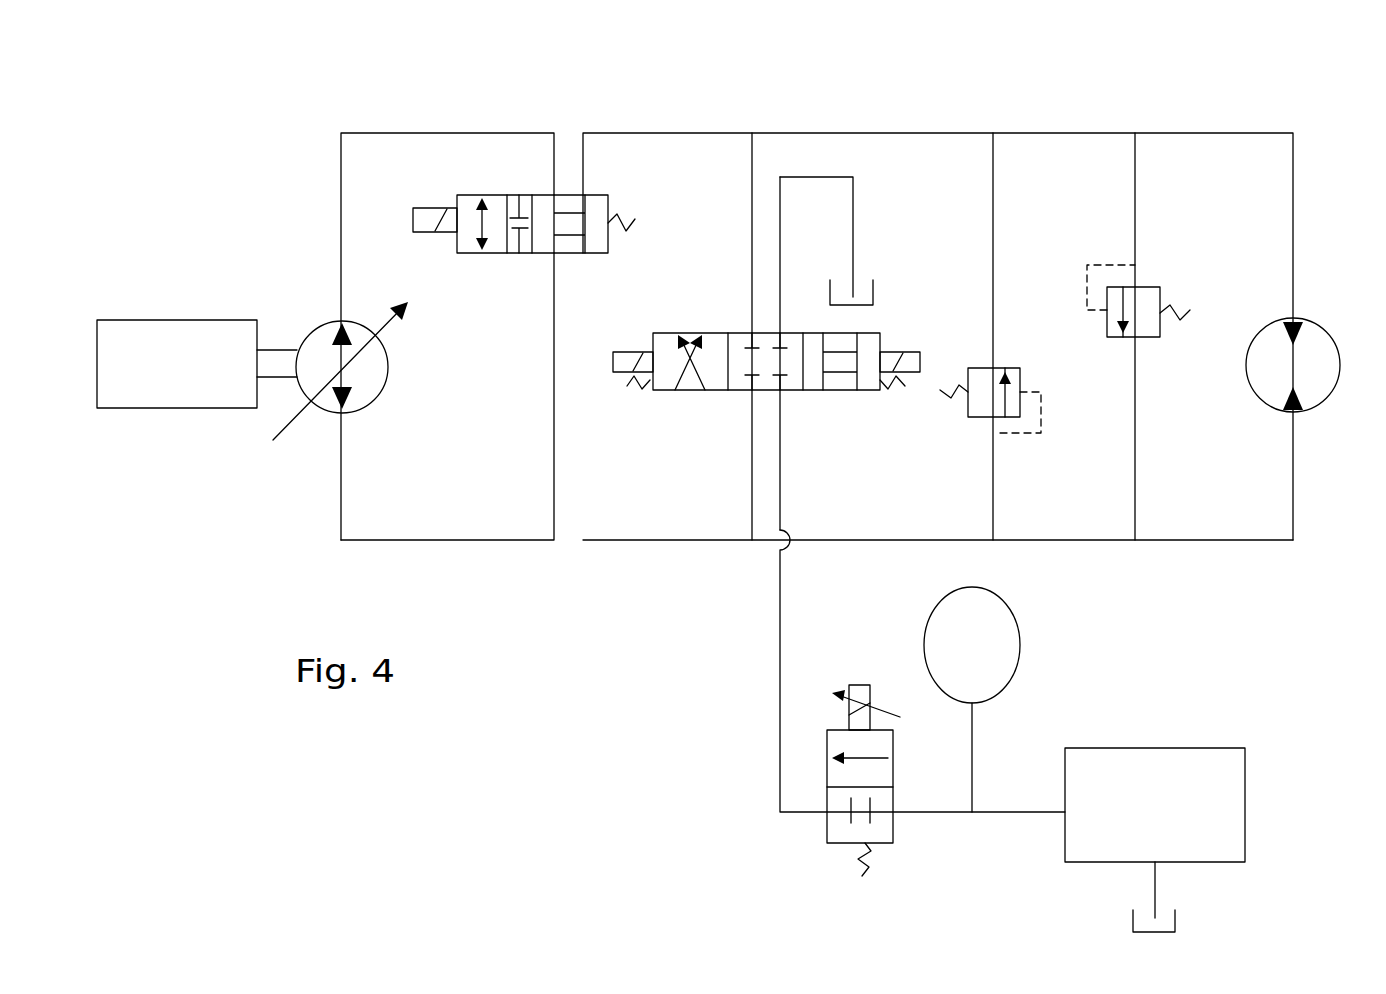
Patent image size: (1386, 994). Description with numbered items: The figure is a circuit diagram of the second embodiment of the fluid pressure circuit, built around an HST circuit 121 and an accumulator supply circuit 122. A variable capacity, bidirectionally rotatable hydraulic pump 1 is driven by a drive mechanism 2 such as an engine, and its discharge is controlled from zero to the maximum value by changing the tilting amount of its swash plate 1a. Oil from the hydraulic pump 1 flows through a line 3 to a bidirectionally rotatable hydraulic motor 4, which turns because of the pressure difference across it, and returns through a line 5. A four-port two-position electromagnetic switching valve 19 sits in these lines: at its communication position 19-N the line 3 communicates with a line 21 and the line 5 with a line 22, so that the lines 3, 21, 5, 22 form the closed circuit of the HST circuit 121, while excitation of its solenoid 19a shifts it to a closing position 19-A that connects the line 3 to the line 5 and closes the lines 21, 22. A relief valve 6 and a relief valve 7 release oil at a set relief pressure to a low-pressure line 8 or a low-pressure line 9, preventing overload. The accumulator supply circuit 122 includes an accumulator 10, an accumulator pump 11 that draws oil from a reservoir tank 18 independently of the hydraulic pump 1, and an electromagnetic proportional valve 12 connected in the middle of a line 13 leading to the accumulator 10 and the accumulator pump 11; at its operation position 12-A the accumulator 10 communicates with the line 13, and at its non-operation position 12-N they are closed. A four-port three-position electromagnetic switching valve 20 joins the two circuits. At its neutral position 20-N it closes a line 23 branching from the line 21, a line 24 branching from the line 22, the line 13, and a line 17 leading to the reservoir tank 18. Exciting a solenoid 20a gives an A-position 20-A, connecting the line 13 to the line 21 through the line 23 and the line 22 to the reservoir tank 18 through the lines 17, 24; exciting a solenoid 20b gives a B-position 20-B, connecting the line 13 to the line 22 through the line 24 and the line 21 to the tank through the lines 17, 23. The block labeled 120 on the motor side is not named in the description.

The hydraulic pump 1 is at (322, 412).
The swash plate 1a is at (290, 420).
The drive mechanism 2 is at (182, 320).
The line 3 is at (462, 133).
The hydraulic motor 4 is at (1312, 407).
The line 5 is at (500, 540).
The relief valve 6 is at (1140, 287).
The relief valve 7 is at (1007, 366).
The low-pressure line 8 is at (1135, 470).
The low-pressure line 9 is at (993, 178).
The accumulator 10 is at (1020, 645).
The accumulator pump 11 is at (1165, 748).
The electromagnetic proportional valve 12 is at (895, 768).
The operation position 12-A is at (893, 776).
The non-operation position 12-N is at (893, 828).
The line 13 is at (780, 752).
The line 17 is at (853, 229).
The reservoir tank 18 is at (873, 290).
The four-port two-position electromagnetic switching valve 19 is at (507, 197).
The solenoid 19a is at (420, 208).
The closing position 19-A is at (497, 195).
The communication position 19-N is at (592, 195).
The four-port three-position electromagnetic switching valve 20 is at (788, 390).
The solenoid 20a is at (640, 352).
The solenoid 20b is at (922, 360).
The A-position 20-A is at (680, 392).
The B-position 20-B is at (845, 392).
The neutral position 20-N is at (765, 392).
The line 21 is at (857, 133).
The line 22 is at (845, 540).
The line 23 is at (752, 170).
The line 24 is at (752, 503).
The motor-side hydraulic circuit 120 is at (1160, 94).
The HST circuit 121 is at (632, 96).
The accumulator supply circuit 122 is at (1160, 604).